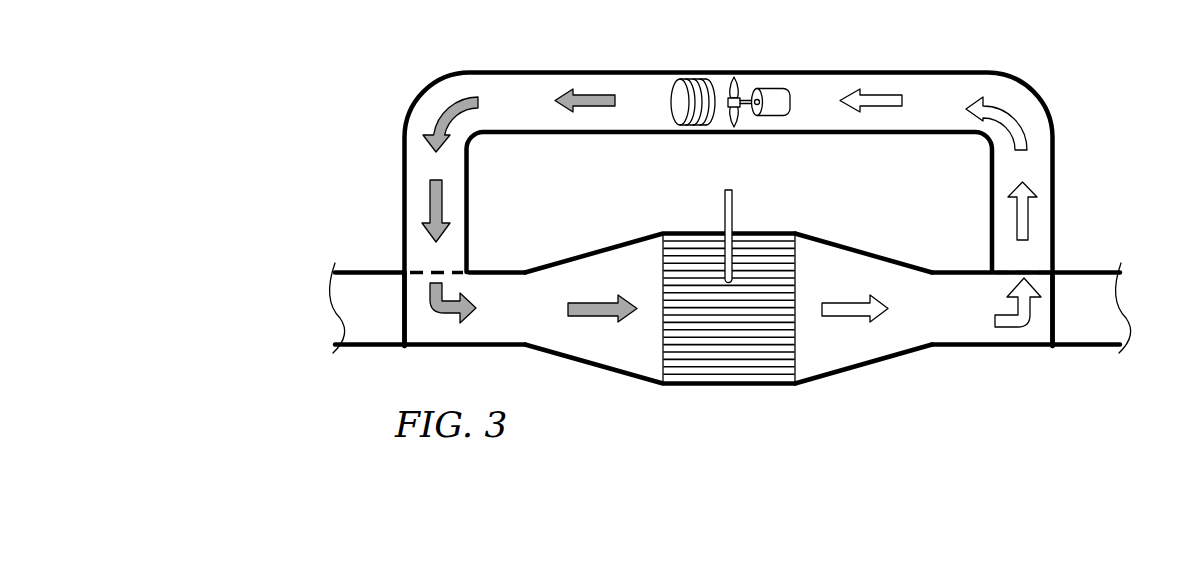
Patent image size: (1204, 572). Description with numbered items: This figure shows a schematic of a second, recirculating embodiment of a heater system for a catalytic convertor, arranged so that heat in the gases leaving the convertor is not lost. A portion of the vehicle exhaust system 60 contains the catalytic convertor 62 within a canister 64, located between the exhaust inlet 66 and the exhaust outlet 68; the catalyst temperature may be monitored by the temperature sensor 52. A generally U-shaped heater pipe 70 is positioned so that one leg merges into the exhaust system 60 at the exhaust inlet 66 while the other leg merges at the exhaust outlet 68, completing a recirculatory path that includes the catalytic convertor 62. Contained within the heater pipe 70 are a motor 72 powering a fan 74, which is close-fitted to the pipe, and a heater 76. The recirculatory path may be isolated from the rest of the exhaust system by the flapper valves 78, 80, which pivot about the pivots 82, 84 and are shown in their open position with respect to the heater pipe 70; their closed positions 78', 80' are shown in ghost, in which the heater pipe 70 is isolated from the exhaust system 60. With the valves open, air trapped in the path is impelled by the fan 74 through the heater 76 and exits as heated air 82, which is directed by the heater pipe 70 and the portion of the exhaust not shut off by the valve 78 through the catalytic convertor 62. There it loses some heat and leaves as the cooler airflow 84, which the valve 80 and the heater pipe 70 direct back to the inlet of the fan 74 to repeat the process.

The temperature sensor 52 is at (723, 215).
The vehicle exhaust system 60 is at (733, 388).
The catalytic convertor 62 is at (752, 256).
The canister 64 is at (890, 358).
The exhaust inlet 66 is at (380, 348).
The exhaust outlet 68 is at (1073, 348).
The heater pipe 70 is at (1057, 200).
The motor 72 is at (770, 88).
The fan 74 is at (735, 77).
The heater 76 is at (687, 76).
The valve 78 is at (350, 309).
The closed position of valve 78' is at (407, 244).
The valve 80 is at (1110, 309).
The closed position of valve 80' is at (1055, 242).
The heated air 82 is at (447, 112).
The airflow 84 is at (1010, 312).